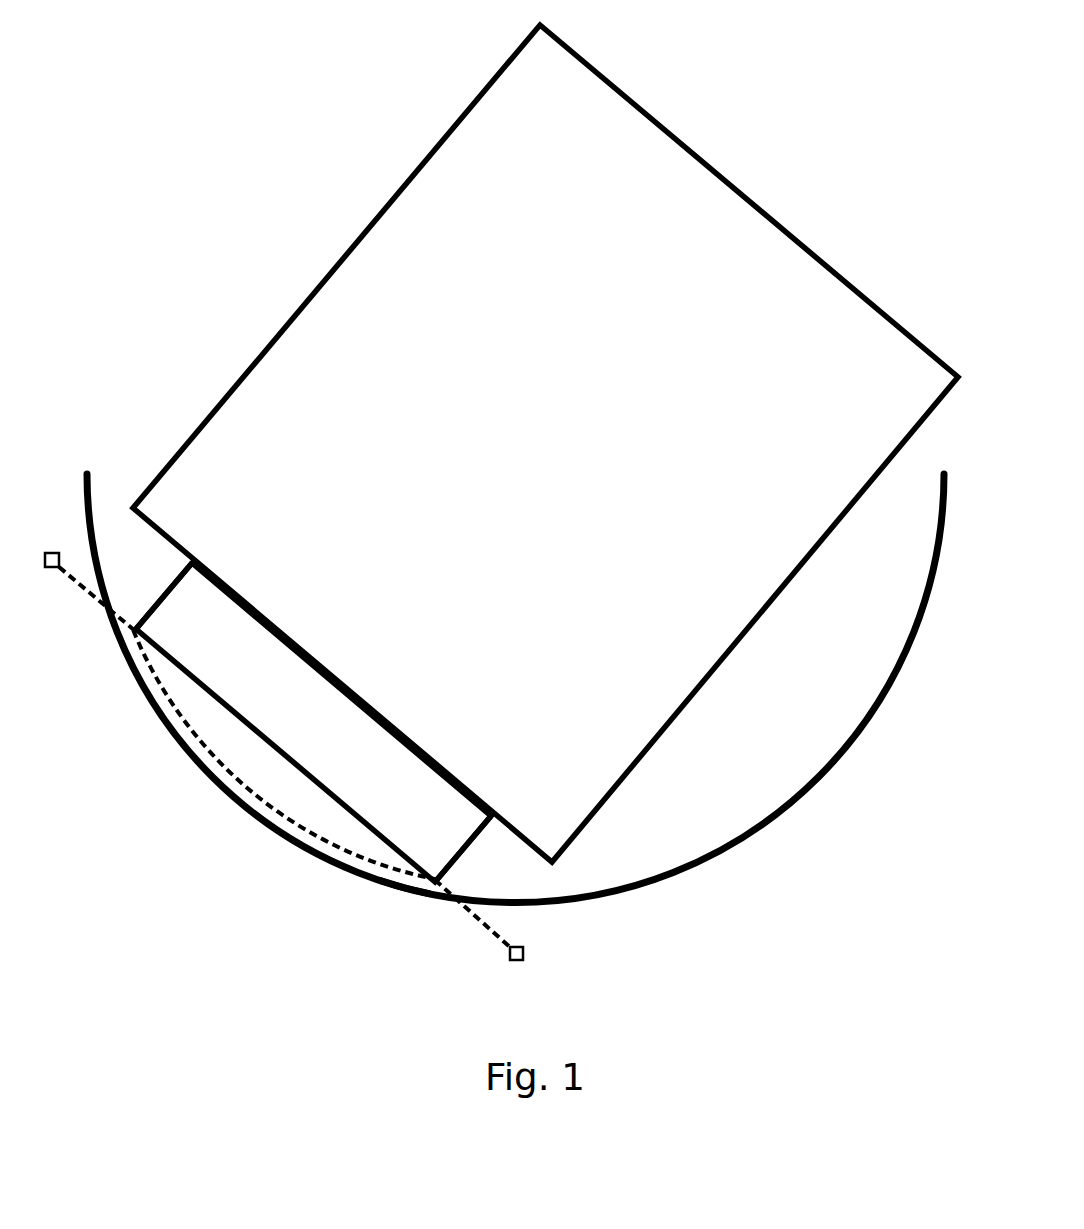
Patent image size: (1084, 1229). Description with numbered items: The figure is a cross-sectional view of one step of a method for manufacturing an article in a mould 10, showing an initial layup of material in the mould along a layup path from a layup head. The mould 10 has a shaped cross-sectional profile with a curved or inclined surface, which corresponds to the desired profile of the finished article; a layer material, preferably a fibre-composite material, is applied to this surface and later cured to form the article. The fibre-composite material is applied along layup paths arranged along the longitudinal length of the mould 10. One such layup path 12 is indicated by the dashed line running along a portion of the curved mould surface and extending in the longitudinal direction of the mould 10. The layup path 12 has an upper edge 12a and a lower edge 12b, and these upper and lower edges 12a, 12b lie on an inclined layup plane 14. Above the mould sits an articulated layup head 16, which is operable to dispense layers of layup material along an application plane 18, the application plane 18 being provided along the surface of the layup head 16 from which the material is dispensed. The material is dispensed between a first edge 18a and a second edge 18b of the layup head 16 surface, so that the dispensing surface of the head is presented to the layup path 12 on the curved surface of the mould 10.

The mould 10 is at (823, 778).
The layup path 12 is at (245, 788).
The upper edge 12a is at (110, 671).
The lower edge 12b is at (394, 917).
The inclined layup plane 14 is at (493, 929).
The articulated layup head 16 is at (383, 207).
The application plane 18 is at (284, 752).
The first edge 18a is at (172, 620).
The second edge 18b is at (441, 834).